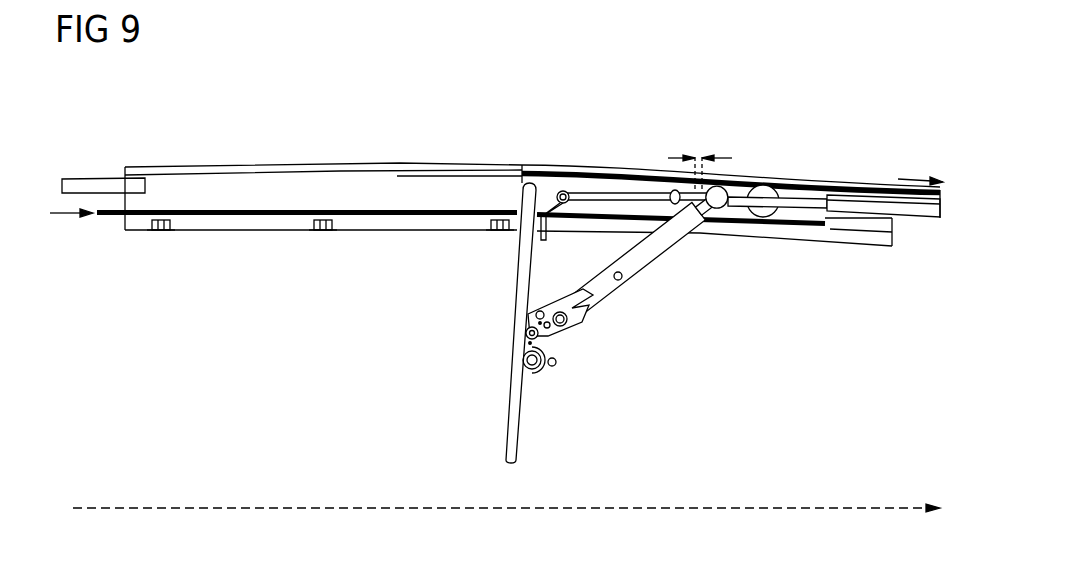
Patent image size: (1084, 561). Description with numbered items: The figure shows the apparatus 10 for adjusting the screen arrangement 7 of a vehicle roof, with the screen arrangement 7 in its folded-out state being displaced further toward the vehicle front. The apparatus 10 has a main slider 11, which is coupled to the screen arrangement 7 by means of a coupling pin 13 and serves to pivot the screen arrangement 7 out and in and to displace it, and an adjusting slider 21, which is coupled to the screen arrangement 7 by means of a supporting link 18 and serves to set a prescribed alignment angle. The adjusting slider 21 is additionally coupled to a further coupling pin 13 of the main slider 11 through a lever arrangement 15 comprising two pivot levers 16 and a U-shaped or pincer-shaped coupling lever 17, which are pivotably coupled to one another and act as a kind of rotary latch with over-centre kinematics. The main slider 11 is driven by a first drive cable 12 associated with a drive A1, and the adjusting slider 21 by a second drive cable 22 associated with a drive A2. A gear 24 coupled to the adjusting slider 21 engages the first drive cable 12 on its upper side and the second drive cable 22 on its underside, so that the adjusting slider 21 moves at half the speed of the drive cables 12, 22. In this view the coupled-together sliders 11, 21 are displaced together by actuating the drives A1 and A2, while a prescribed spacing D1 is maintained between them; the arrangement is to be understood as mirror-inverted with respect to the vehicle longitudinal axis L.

The screen arrangement 7 is at (514, 415).
The apparatus 10 is at (322, 131).
The main slider 11 is at (619, 192).
The first drive cable 12 is at (878, 185).
The coupling pin 13 is at (563, 191).
The lever arrangement 15 is at (578, 365).
The pivot levers 16 is at (531, 343).
The coupling lever 17 is at (578, 322).
The supporting link 18 is at (612, 290).
The adjusting slider 21 is at (813, 193).
The second drive cable 22 is at (252, 216).
The gear 24 is at (768, 186).
The drive of the main slider A1 is at (905, 178).
The drive of the adjusting slider A2 is at (68, 214).
The spacing D1 is at (700, 150).
The vehicle longitudinal axis L is at (124, 507).